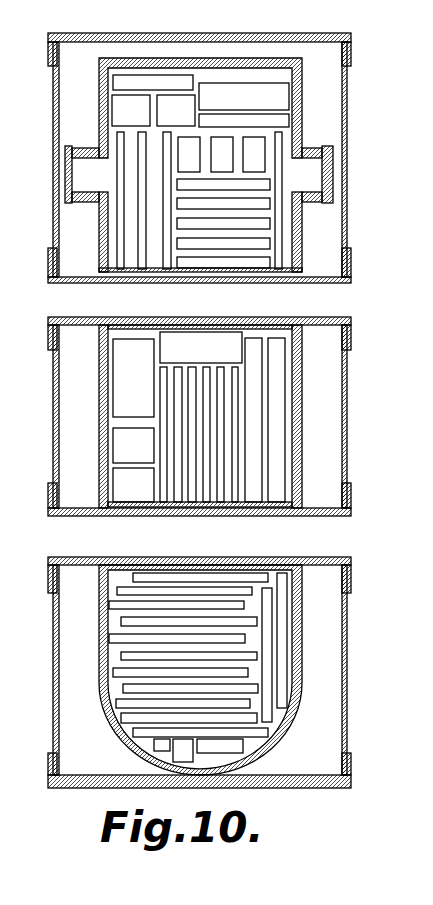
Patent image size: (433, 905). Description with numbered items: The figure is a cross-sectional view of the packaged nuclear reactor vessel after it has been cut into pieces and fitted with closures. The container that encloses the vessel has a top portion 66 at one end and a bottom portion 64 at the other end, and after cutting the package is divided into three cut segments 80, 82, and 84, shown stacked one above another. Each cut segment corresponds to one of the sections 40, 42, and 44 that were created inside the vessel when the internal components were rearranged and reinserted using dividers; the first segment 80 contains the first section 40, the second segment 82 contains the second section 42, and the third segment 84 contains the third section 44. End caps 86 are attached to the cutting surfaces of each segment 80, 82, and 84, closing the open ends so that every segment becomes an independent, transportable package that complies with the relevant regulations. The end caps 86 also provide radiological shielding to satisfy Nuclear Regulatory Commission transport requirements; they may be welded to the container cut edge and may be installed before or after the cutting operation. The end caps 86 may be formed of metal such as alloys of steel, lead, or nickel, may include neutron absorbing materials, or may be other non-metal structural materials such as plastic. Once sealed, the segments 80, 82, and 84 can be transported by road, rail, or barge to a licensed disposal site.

The top portion 66 is at (62, 40).
The end caps 86 is at (351, 42).
The section 40 is at (345, 100).
The cut segment 80 is at (212, 404).
The section 42 is at (345, 410).
The cut segment 82 is at (238, 416).
The section 44 is at (345, 622).
The cut segment 84 is at (239, 691).
The bottom portion 64 is at (93, 782).